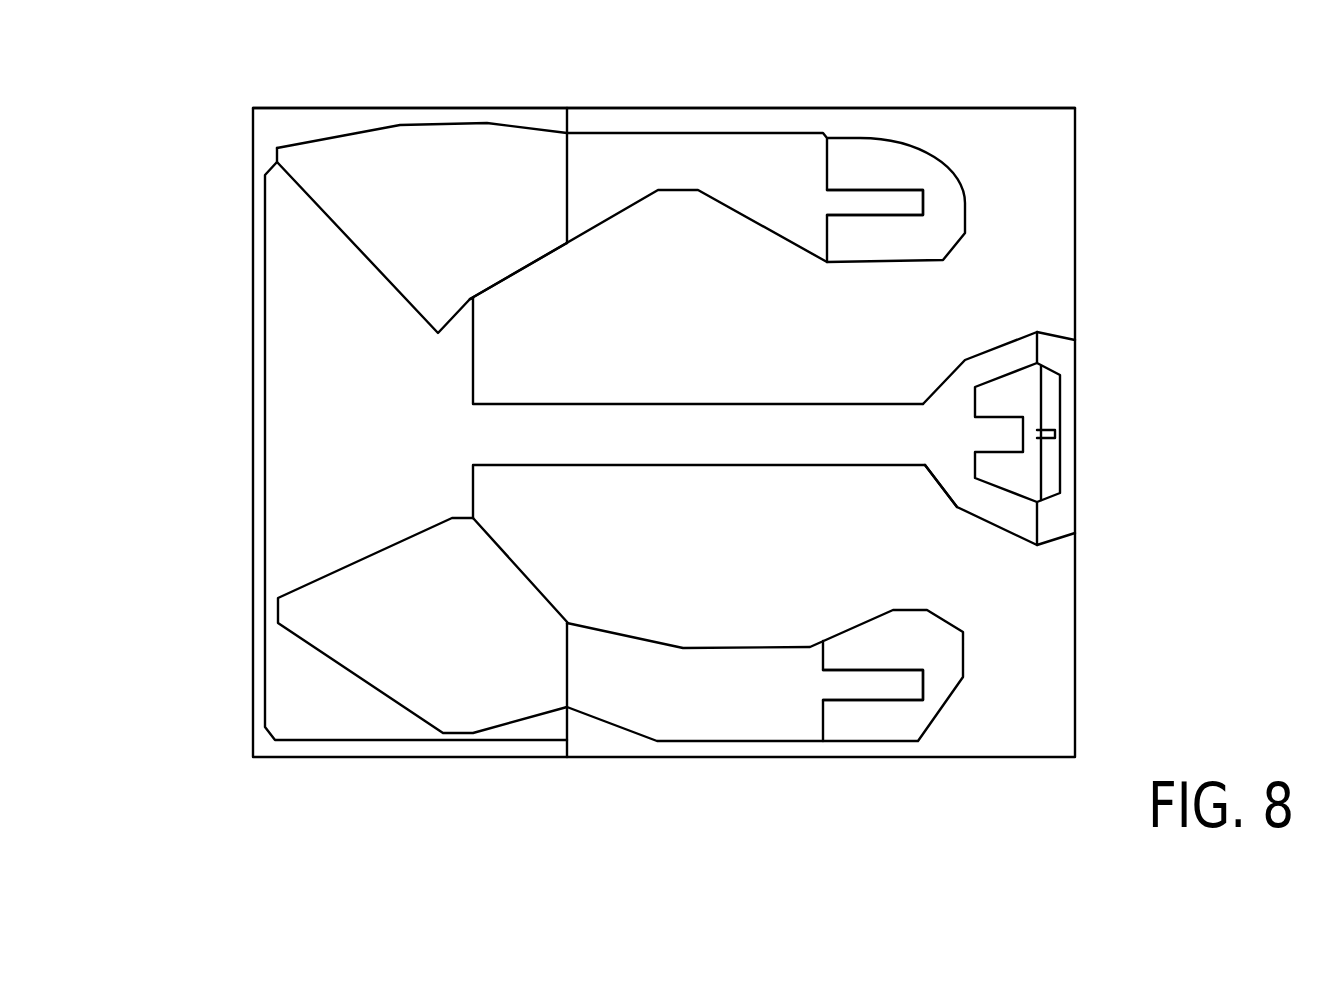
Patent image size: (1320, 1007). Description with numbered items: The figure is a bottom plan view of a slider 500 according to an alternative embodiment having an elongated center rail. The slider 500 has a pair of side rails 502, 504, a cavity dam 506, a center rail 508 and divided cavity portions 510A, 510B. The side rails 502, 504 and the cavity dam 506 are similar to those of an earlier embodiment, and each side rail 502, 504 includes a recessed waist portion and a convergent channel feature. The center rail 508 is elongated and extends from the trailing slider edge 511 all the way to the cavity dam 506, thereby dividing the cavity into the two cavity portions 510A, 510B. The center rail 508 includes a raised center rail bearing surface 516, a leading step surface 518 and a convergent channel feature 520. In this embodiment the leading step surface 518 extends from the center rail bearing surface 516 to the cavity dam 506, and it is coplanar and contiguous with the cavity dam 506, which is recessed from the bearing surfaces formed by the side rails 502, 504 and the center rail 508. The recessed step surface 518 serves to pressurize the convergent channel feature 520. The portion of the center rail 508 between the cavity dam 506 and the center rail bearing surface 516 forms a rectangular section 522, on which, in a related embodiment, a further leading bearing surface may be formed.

The slider 500 is at (220, 138).
The side rail 502 is at (442, 150).
The side rail 504 is at (448, 686).
The cavity dam 506 is at (298, 390).
The center rail 508 is at (998, 337).
The divided cavity portion 510A is at (713, 301).
The divided cavity portion 510B is at (713, 539).
The trailing slider edge 511 is at (1075, 598).
The center rail bearing surface 516 is at (1022, 387).
The leading step surface 518 is at (950, 478).
The convergent channel feature 520 is at (986, 433).
The rectangular section 522 is at (707, 403).